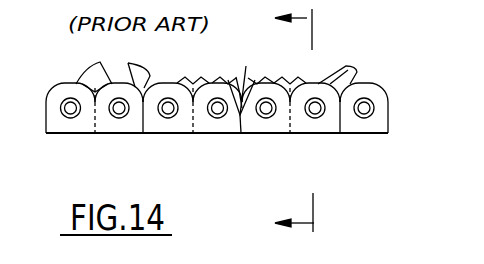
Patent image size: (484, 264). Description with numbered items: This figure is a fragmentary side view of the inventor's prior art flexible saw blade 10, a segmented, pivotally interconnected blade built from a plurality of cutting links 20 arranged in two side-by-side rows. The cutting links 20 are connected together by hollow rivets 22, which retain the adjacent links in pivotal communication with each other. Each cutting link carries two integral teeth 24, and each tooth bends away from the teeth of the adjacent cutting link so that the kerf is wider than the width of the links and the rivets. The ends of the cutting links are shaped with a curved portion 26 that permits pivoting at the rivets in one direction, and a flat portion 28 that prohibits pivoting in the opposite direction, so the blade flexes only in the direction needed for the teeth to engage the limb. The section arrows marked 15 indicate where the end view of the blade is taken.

The prior art flexible saw blade 10 is at (388, 88).
The section line 15- 15 is at (312, 121).
The cutting link 20 is at (158, 134).
The hollow rivet 22 is at (175, 115).
The tooth 24 is at (110, 58).
The curved portion 26 is at (241, 87).
The flat portion 28 is at (233, 94).